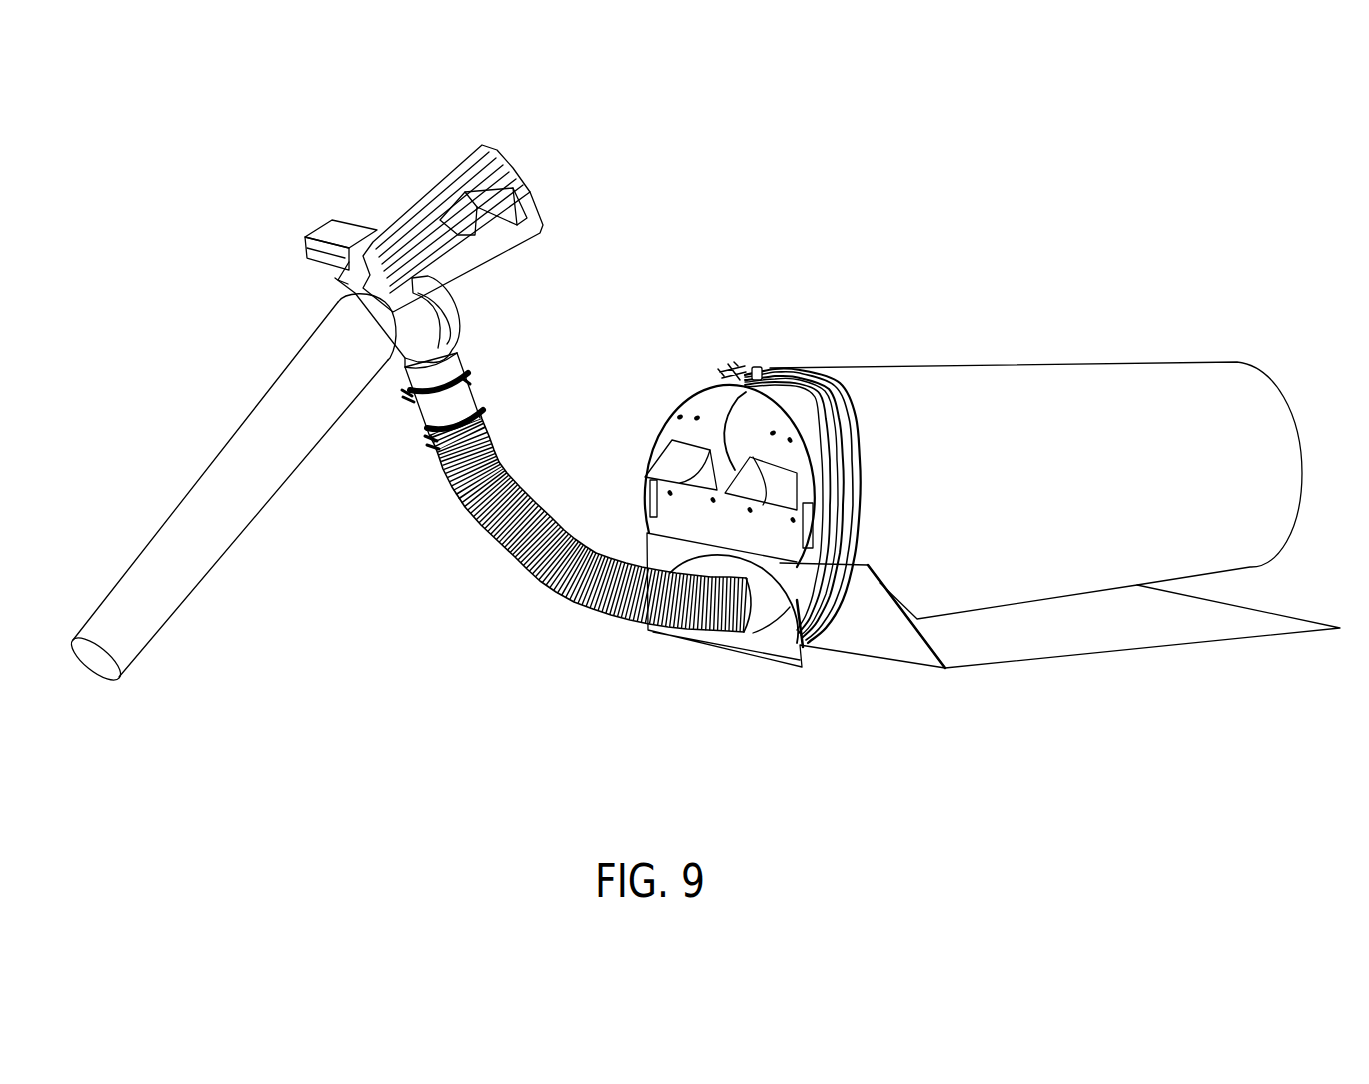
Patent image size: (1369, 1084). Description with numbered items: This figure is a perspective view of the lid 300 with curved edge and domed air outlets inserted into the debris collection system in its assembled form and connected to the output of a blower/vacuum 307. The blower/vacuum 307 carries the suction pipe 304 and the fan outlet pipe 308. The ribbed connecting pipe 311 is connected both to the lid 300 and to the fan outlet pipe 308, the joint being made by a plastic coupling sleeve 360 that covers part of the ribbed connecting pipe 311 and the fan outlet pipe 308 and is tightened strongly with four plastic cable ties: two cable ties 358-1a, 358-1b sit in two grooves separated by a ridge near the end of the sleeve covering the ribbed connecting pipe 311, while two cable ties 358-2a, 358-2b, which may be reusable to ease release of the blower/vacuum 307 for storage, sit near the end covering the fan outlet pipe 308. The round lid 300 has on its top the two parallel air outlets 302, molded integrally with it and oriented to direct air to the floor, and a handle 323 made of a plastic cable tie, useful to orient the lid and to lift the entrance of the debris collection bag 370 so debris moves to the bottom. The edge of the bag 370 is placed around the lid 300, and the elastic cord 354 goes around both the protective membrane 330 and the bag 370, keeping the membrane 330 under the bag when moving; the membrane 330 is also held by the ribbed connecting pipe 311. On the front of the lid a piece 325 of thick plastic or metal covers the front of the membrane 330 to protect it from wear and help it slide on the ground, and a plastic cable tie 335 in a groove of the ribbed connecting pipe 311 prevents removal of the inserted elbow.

The lid 300 is at (716, 430).
The air outlets 302 is at (763, 471).
The suction pipe 304 is at (230, 490).
The blower/vacuum 307 is at (377, 228).
The fan outlet pipe 308 is at (327, 321).
The ribbed connecting pipe 311 is at (574, 566).
The handle 323 is at (838, 425).
The piece of thick plastic or metal 325 is at (780, 632).
The protective membrane 330 is at (1060, 654).
The plastic cable tie 335 is at (674, 561).
The elastic cord 354 is at (835, 444).
The cable tie 358-1a is at (352, 547).
The cable tie 358-1b is at (341, 510).
The cable tie 358-2a is at (614, 307).
The cable tie 358-2b is at (581, 286).
The plastic coupling sleeve 360 is at (499, 395).
The debris collection bag 370 is at (1036, 449).